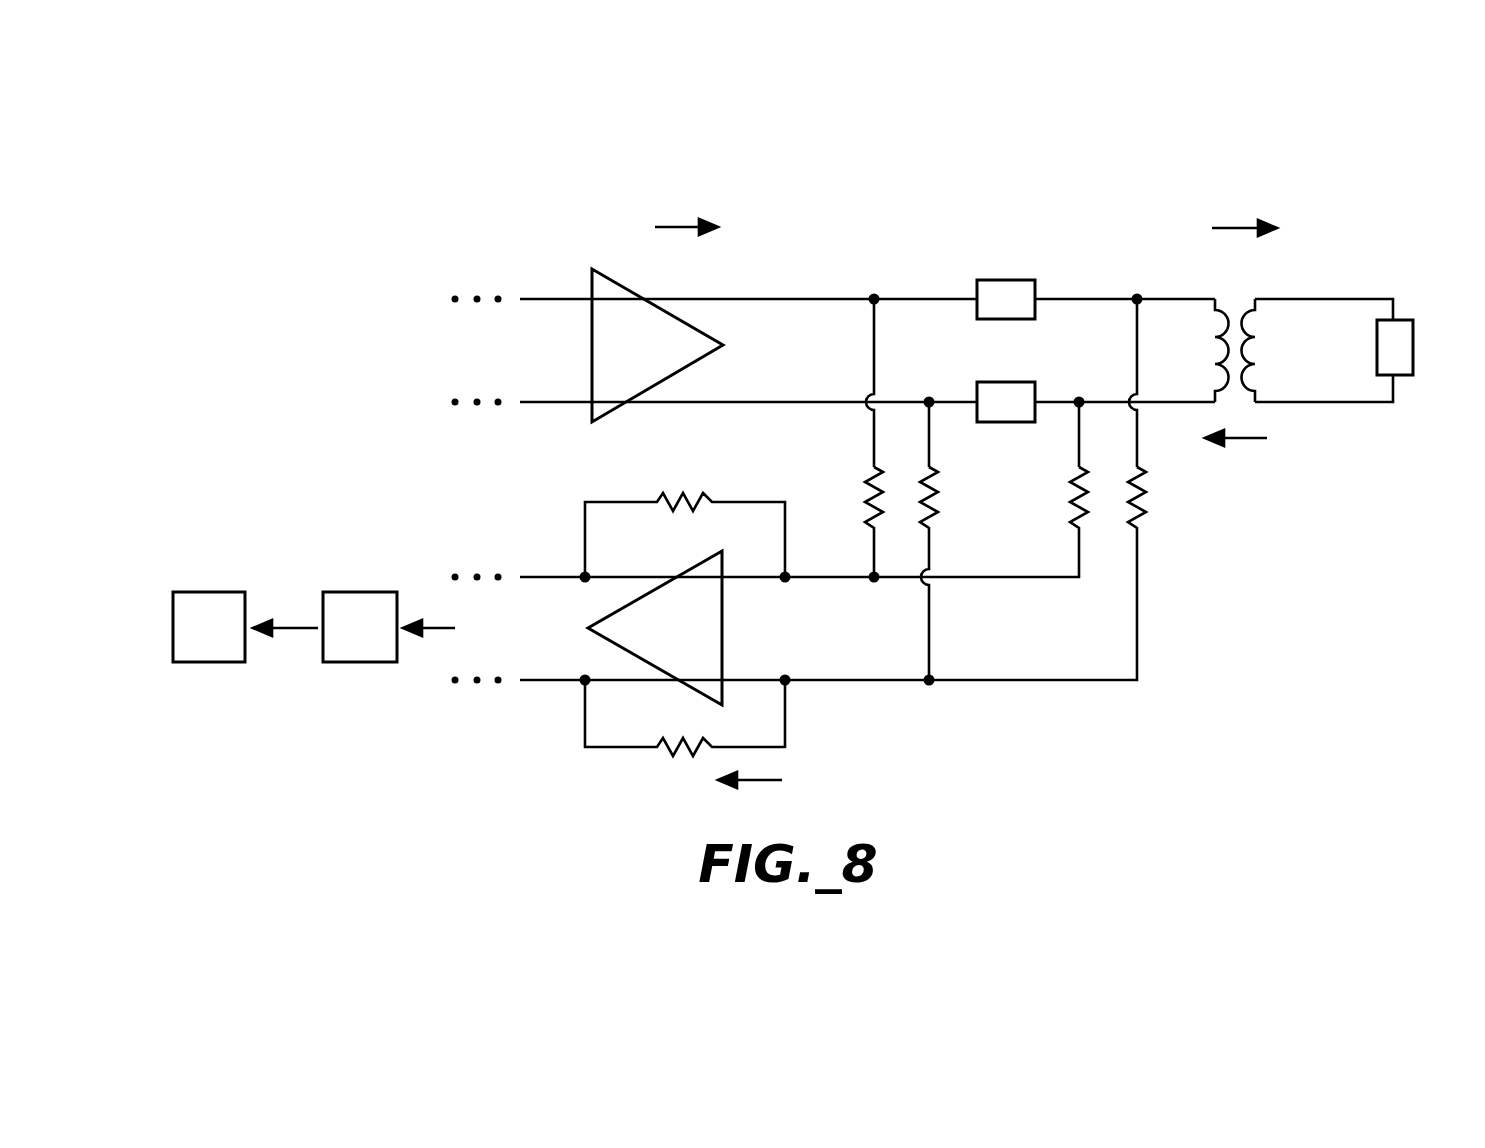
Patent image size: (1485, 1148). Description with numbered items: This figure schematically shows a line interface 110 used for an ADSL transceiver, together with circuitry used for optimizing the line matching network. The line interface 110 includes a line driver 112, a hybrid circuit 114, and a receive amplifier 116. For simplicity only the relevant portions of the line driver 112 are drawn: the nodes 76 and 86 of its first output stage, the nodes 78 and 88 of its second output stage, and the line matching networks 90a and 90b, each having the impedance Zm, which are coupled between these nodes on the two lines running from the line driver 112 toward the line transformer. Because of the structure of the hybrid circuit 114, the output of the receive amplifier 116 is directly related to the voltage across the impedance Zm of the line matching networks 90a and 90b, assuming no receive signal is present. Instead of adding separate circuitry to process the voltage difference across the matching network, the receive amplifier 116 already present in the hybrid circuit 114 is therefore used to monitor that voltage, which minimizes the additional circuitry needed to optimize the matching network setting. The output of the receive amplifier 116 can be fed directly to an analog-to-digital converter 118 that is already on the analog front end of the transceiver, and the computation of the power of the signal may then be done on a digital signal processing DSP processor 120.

The line interface 110 is at (1015, 190).
The line driver 112 is at (625, 285).
The node of the first output stage 76 is at (872, 295).
The node of the second output stage 78 is at (1134, 295).
The line matching network 90a is at (1011, 279).
The line matching network 90b is at (1011, 381).
The node of the first output stage 86 is at (930, 406).
The node of the second output stage 88 is at (1078, 407).
The hybrid circuit 114 is at (1080, 704).
The receive amplifier 116 is at (690, 568).
The analog-to-digital converter (ADC) 118 is at (382, 591).
The digital signal processing DSP processor 120 is at (232, 591).